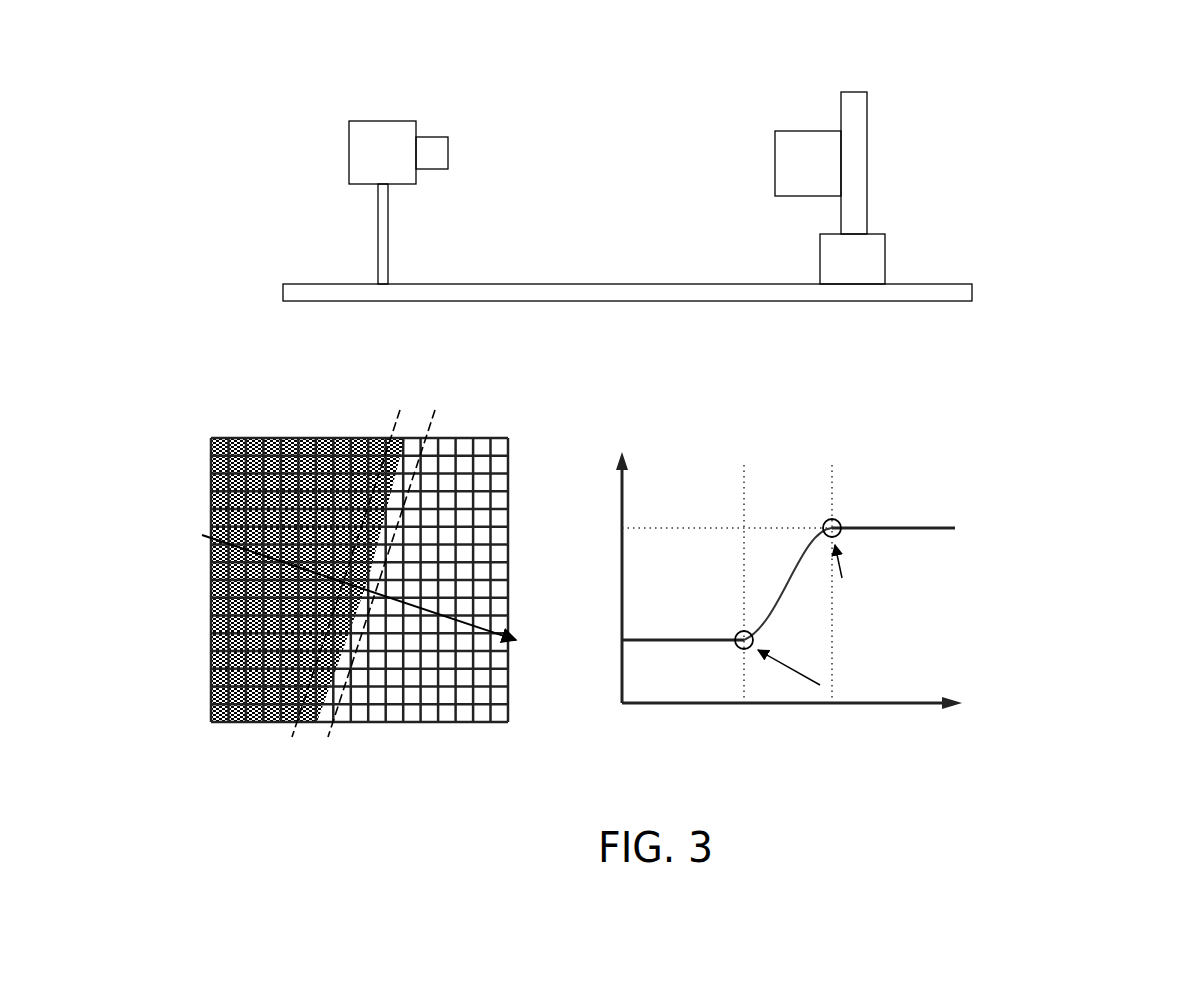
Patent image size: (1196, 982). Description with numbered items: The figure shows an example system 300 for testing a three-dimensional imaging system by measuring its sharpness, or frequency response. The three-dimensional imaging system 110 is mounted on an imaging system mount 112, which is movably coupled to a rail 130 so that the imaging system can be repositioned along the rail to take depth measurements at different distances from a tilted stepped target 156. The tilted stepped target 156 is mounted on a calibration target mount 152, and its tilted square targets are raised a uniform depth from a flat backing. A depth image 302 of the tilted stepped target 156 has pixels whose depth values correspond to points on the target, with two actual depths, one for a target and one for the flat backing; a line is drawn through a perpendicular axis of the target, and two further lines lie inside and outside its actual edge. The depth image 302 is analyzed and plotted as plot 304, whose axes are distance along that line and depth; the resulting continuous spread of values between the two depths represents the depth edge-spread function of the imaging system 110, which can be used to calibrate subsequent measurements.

The system 300 is at (251, 106).
The 3D imaging system 110 is at (416, 128).
The 3D imaging system mount 112 is at (388, 262).
The rail 130 is at (608, 284).
The calibration target mount 152 is at (885, 257).
The tilted stepped target 156 is at (867, 120).
The depth image 302 is at (455, 438).
The plot 304 is at (915, 476).